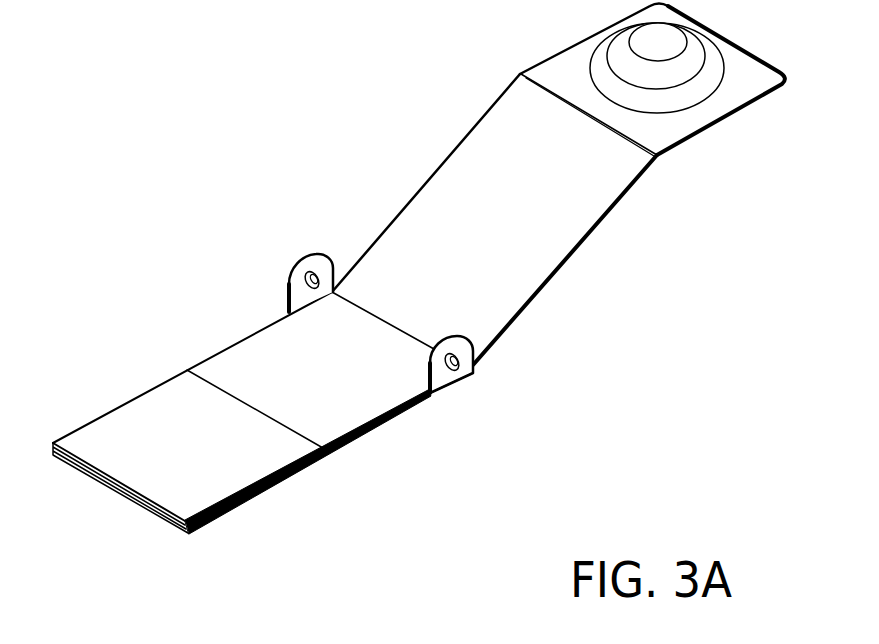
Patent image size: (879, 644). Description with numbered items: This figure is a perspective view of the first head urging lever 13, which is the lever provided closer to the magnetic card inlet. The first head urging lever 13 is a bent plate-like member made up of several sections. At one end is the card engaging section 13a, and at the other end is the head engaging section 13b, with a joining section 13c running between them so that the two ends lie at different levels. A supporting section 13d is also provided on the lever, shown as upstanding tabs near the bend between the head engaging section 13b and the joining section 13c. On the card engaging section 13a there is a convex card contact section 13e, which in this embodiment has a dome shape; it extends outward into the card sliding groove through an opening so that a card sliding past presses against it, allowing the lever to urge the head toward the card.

The first head urging lever 13 is at (444, 269).
The card engaging section 13a is at (680, 127).
The head engaging section 13b is at (343, 425).
The joining section 13c is at (532, 253).
The supporting section 13d is at (440, 378).
The card contact section 13e is at (685, 73).